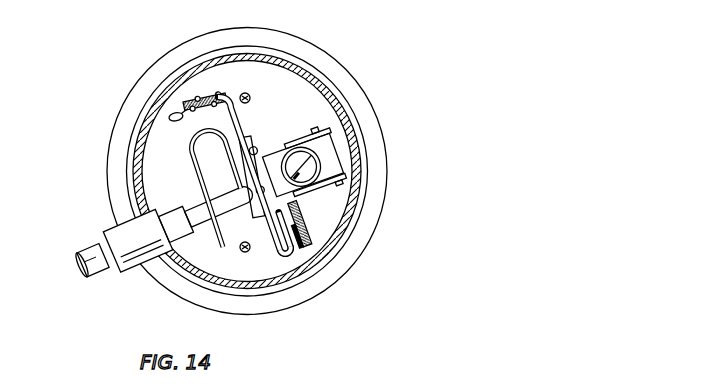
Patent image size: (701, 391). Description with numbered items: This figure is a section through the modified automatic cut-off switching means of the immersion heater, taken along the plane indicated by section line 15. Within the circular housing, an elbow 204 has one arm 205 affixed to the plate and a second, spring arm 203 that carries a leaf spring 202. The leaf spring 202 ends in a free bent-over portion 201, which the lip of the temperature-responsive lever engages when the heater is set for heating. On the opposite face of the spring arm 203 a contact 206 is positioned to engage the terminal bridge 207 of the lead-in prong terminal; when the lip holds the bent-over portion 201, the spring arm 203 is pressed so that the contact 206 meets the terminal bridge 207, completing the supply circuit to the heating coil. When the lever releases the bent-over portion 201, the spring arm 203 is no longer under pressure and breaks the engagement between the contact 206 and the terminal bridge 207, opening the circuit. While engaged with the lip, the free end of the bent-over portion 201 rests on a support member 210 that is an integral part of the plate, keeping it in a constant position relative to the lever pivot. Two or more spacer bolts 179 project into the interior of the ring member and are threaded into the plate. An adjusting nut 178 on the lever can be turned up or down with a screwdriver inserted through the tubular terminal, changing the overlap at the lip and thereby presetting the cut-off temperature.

The section line 15 is at (78, 274).
The nut 178 is at (284, 163).
The spacer bolts 179 is at (248, 94).
The bent-over portion 201 is at (192, 228).
The leaf spring 202 is at (191, 152).
The spring arm 203 is at (279, 252).
The elbow 204 is at (235, 104).
The arm 205 is at (210, 111).
The contact 206 is at (300, 243).
The terminal bridge 207 is at (312, 238).
The support member 210 is at (176, 248).